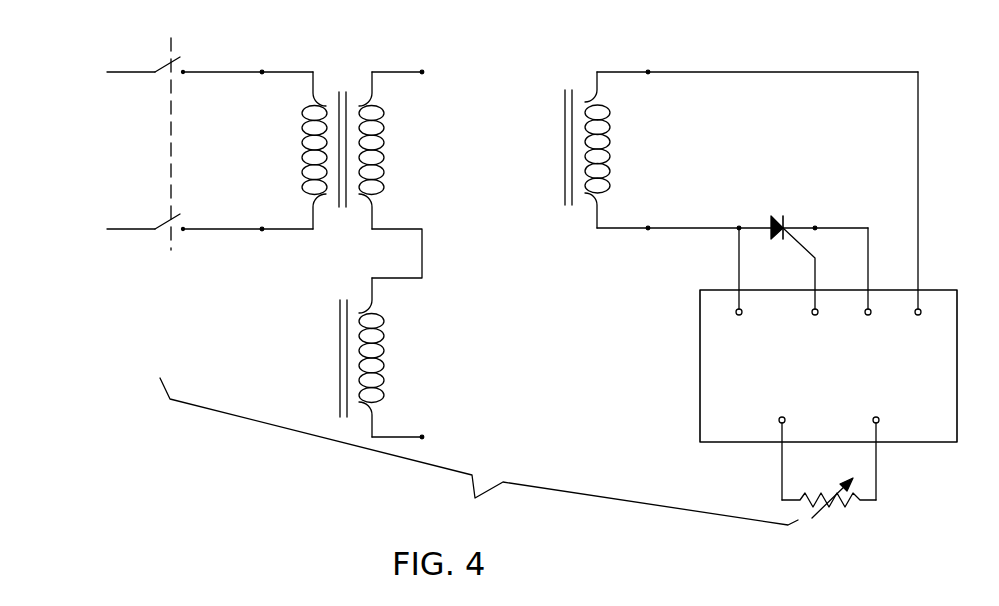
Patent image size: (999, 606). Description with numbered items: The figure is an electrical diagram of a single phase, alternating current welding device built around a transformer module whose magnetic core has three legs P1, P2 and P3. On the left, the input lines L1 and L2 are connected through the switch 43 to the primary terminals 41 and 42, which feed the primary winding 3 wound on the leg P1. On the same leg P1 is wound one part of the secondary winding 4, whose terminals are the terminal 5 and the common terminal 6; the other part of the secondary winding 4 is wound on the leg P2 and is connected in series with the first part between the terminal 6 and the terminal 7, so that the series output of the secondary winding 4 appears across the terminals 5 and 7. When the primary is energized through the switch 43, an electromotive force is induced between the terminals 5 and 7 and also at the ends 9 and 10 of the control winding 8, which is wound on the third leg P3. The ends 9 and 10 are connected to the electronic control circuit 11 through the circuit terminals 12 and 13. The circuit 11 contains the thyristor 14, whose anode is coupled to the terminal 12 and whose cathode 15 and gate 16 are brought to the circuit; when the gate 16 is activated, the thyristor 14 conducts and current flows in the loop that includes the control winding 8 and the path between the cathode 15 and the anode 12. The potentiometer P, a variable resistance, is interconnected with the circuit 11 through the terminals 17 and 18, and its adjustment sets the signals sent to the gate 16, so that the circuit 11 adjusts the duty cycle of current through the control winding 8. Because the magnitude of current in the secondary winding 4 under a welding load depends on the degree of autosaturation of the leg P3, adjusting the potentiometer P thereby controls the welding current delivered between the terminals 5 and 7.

The input line L1 is at (116, 73).
The input line L2 is at (116, 230).
The switch 43 is at (167, 134).
The primary terminal 41 is at (248, 59).
The primary terminal 42 is at (248, 216).
The core leg P1 is at (342, 136).
The primary winding 3 is at (307, 150).
The secondary winding 4 is at (378, 254).
The secondary terminal 5 is at (399, 59).
The secondary terminal 6 is at (405, 253).
The core leg P2 is at (342, 345).
The secondary terminal 7 is at (400, 425).
The core leg P3 is at (569, 134).
The control winding 8 is at (604, 150).
The control winding terminal 9 is at (757, 59).
The control winding terminal 10 is at (668, 215).
The electronic control circuit 11 is at (843, 366).
The circuit terminal 12 is at (749, 272).
The circuit terminal 13 is at (919, 208).
The thyristor 14 is at (817, 217).
The cathode 15 is at (868, 286).
The gate 16 is at (806, 286).
The terminal 17 is at (876, 447).
The terminal 18 is at (781, 447).
The potentiometer P is at (829, 507).